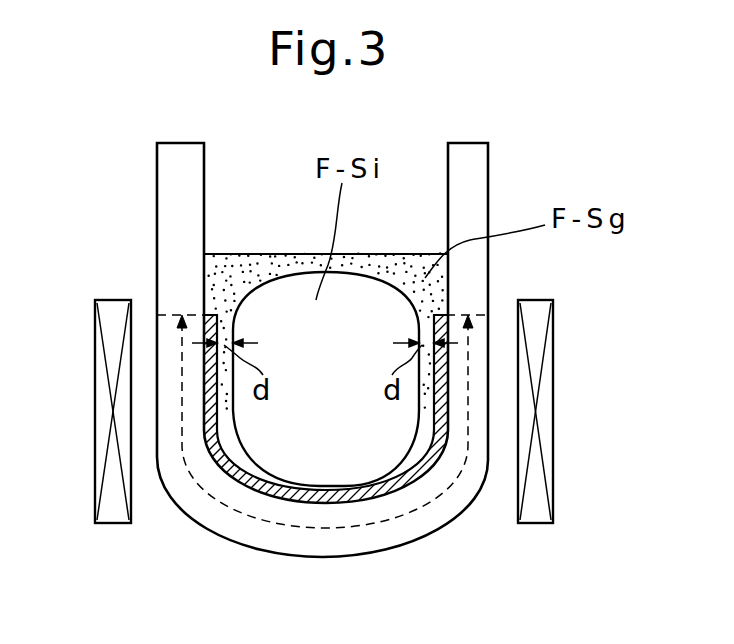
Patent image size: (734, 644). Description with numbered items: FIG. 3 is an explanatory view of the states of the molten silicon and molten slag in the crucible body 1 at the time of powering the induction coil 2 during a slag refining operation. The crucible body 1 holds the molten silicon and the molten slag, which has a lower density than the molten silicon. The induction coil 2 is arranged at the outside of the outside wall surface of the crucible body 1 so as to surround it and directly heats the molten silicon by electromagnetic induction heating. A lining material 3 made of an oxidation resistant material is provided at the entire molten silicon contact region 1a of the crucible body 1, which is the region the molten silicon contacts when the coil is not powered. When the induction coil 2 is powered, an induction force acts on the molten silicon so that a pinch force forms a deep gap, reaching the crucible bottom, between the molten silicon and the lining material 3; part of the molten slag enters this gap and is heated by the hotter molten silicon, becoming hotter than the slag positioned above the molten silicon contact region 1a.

The crucible body 1 is at (488, 172).
The molten silicon contact region 1a is at (437, 492).
The induction coil 2 is at (95, 403).
The lining material 3 is at (423, 430).